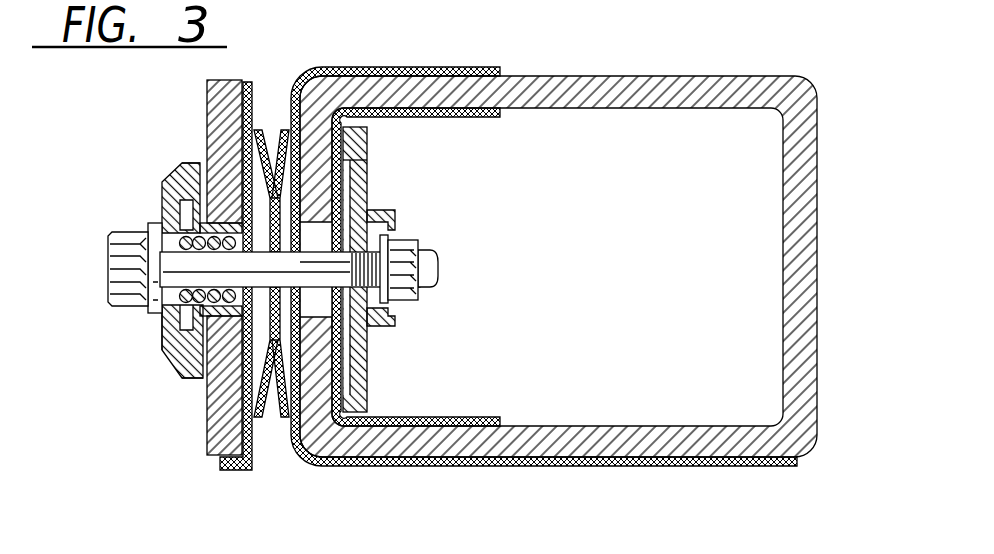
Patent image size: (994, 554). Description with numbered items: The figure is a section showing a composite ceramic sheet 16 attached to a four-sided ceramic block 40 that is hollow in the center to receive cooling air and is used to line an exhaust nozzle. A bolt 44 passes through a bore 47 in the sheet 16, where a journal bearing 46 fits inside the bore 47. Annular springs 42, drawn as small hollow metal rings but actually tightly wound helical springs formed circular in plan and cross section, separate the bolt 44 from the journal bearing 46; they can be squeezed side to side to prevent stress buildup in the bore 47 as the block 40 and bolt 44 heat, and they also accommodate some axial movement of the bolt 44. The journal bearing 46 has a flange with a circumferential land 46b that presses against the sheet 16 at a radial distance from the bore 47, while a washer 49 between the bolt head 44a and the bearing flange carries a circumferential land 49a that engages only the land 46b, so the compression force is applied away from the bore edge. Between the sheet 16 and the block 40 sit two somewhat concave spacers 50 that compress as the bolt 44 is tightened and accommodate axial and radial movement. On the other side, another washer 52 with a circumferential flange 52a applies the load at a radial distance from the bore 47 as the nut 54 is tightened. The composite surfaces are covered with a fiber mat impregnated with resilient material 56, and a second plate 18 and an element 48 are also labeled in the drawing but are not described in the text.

The composite sheet 16 is at (210, 110).
The second plate 18 is at (340, 155).
The ceramic block 40 is at (583, 78).
The annular springs 42 is at (163, 350).
The bolt 44 is at (157, 305).
The bolt head 44a is at (110, 302).
The journal bearing 46 is at (190, 213).
The circumferential land 46b is at (195, 163).
The bore 47 is at (228, 232).
The sealing rings 48 is at (167, 220).
The washer 49 is at (163, 333).
The circumferential land 49a is at (183, 377).
The concave spacers 50 is at (281, 407).
The washer 52 is at (362, 202).
The circumferential flange 52a is at (347, 398).
The nut 54 is at (413, 300).
The fiber mat impregnated with resilient material 56 is at (420, 422).